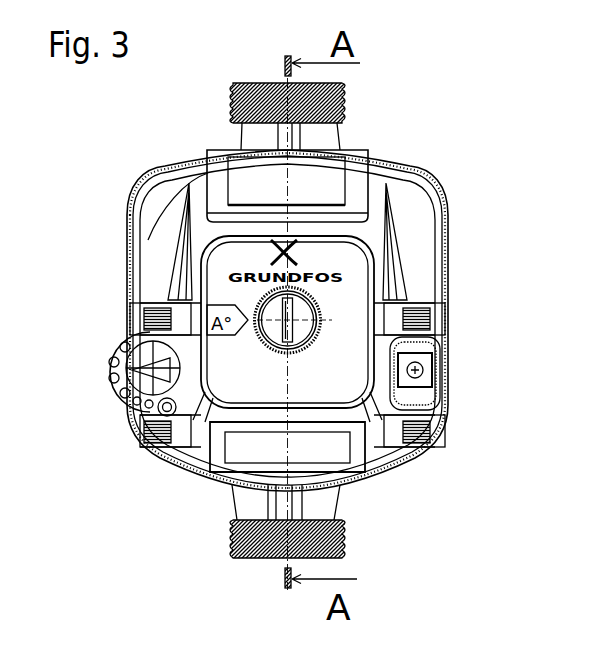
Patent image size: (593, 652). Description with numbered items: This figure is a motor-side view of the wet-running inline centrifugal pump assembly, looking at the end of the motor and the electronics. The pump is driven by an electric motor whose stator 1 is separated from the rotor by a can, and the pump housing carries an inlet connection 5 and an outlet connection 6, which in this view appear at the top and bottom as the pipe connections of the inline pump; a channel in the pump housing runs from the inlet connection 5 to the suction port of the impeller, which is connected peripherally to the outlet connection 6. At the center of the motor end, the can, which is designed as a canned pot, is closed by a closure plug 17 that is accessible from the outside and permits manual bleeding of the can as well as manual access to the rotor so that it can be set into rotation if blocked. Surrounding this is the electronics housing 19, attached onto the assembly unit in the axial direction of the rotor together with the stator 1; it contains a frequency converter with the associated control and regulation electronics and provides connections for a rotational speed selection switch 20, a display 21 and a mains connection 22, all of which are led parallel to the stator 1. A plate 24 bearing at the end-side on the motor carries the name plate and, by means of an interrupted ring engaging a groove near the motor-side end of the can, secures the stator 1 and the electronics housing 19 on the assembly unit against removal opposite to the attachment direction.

The stator 1 is at (385, 272).
The inlet connection 5 is at (345, 537).
The outlet connection 6 is at (349, 105).
The closure plug 17 is at (300, 331).
The electronics housing 19 is at (388, 223).
The rotational speed selection switch 20 is at (118, 400).
The display 21 is at (332, 202).
The mains connection 22 is at (432, 368).
The plate 24 is at (233, 391).